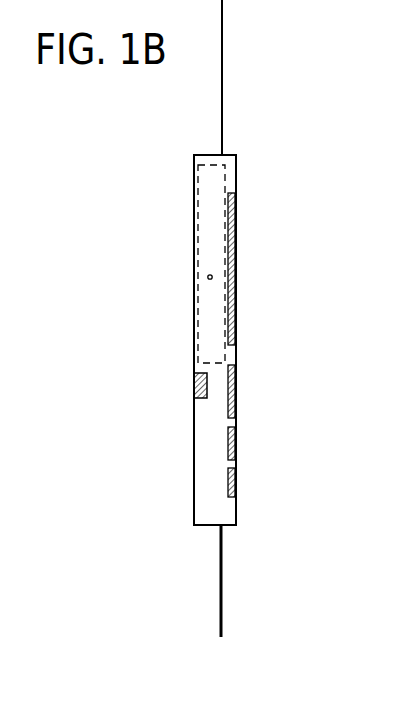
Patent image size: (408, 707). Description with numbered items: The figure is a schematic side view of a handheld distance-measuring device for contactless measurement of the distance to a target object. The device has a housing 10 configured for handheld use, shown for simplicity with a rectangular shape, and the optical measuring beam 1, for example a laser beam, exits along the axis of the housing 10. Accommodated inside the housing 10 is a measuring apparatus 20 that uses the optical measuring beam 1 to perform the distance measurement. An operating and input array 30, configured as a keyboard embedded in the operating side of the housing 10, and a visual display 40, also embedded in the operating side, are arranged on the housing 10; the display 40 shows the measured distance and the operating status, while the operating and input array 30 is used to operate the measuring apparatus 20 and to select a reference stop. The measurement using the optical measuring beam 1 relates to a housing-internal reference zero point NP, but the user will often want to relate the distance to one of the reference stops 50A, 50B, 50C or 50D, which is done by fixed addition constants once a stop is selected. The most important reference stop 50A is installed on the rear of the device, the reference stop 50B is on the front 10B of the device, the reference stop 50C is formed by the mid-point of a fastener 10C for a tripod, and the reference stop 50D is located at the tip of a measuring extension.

The optical measuring beam 1 is at (224, 80).
The housing 10 is at (194, 448).
The front of the device 10B is at (227, 153).
The fastener for a tripod 10C is at (193, 377).
The measuring apparatus 20 is at (194, 210).
The operating and input array 30 is at (236, 397).
The visual display 40 is at (234, 253).
The reference stop 50A is at (185, 527).
The reference stop 50B is at (185, 155).
The reference stop 50C is at (184, 385).
The reference stop 50D is at (210, 635).
The housing-internal reference zero point NP is at (208, 276).